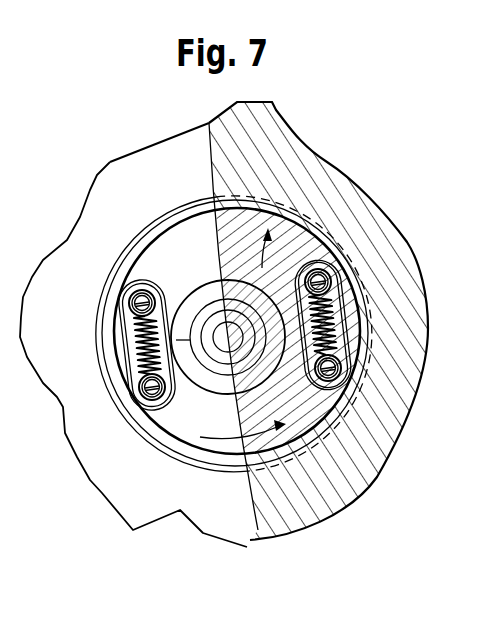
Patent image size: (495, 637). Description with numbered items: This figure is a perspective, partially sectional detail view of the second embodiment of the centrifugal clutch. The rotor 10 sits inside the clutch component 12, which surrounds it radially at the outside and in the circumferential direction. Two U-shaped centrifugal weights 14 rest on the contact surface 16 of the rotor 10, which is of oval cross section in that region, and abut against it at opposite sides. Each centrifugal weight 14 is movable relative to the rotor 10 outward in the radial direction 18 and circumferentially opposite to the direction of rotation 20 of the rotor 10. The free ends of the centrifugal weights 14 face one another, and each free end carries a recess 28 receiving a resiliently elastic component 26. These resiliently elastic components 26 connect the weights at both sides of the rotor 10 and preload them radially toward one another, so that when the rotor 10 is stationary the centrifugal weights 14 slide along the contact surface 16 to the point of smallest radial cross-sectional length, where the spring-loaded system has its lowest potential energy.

The rotor 10 is at (215, 305).
The clutch component 12 is at (100, 492).
The centrifugal weight 14 is at (155, 258).
The contact surface 16 is at (212, 434).
The radial direction 18 is at (267, 257).
The direction of rotation 20 is at (202, 456).
The resiliently elastic component 26 is at (136, 366).
The recess 28 is at (114, 327).